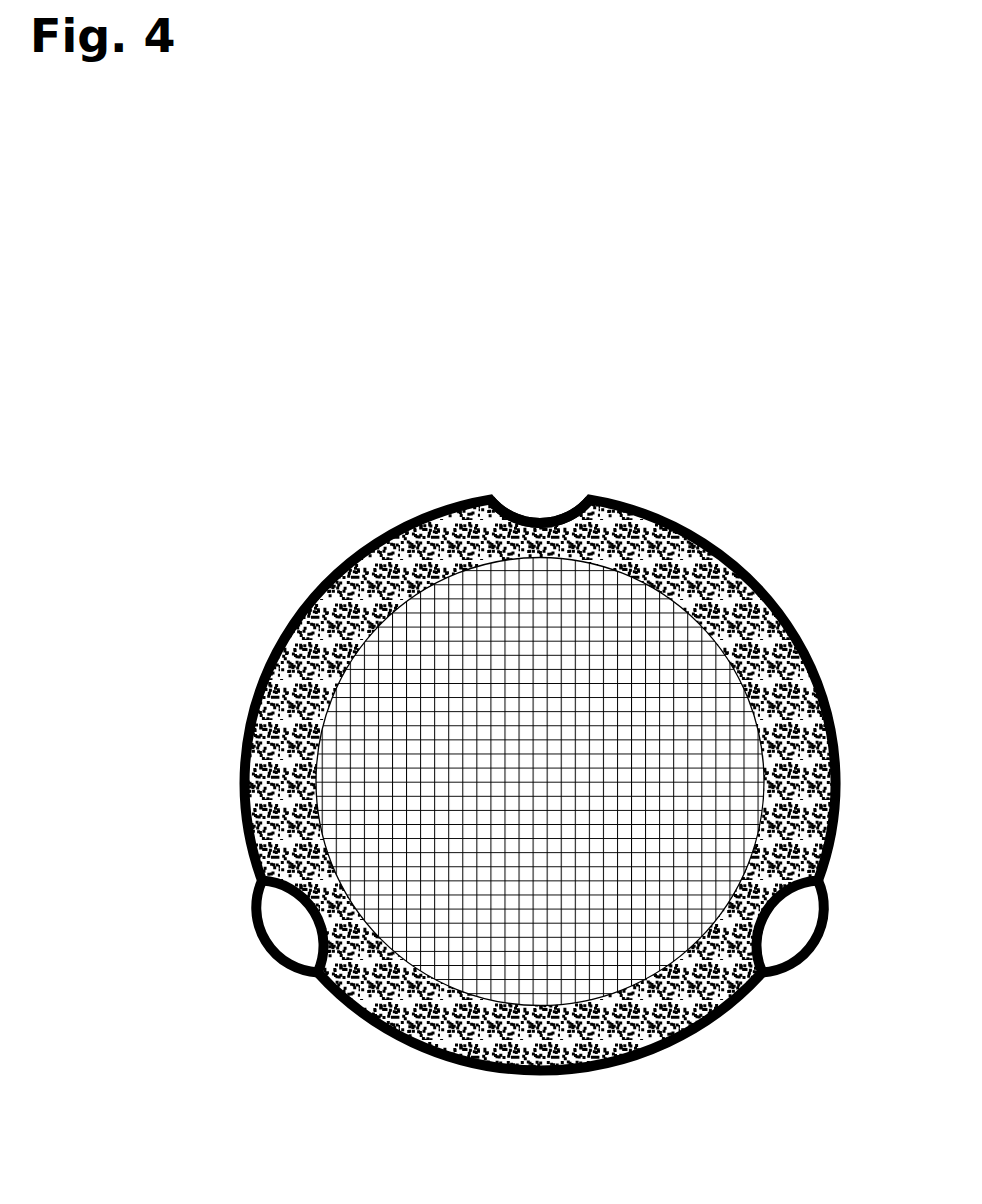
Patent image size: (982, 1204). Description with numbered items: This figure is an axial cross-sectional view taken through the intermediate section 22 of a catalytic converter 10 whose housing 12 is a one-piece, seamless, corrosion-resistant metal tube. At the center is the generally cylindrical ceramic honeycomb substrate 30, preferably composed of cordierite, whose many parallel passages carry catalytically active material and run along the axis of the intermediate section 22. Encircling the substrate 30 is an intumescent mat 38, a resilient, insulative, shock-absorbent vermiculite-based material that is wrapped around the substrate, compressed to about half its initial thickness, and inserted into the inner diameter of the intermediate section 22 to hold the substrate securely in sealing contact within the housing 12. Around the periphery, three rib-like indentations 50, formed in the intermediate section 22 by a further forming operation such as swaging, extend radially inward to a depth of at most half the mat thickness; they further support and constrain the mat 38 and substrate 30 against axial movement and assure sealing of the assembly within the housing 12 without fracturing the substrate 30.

The catalytic converter 10 is at (493, 715).
The housing 12 is at (354, 557).
The intermediate section 22 is at (296, 738).
The ceramic honeycomb substrate 30 is at (400, 718).
The mat 38 is at (660, 568).
The rib-like indentations 50 is at (550, 522).